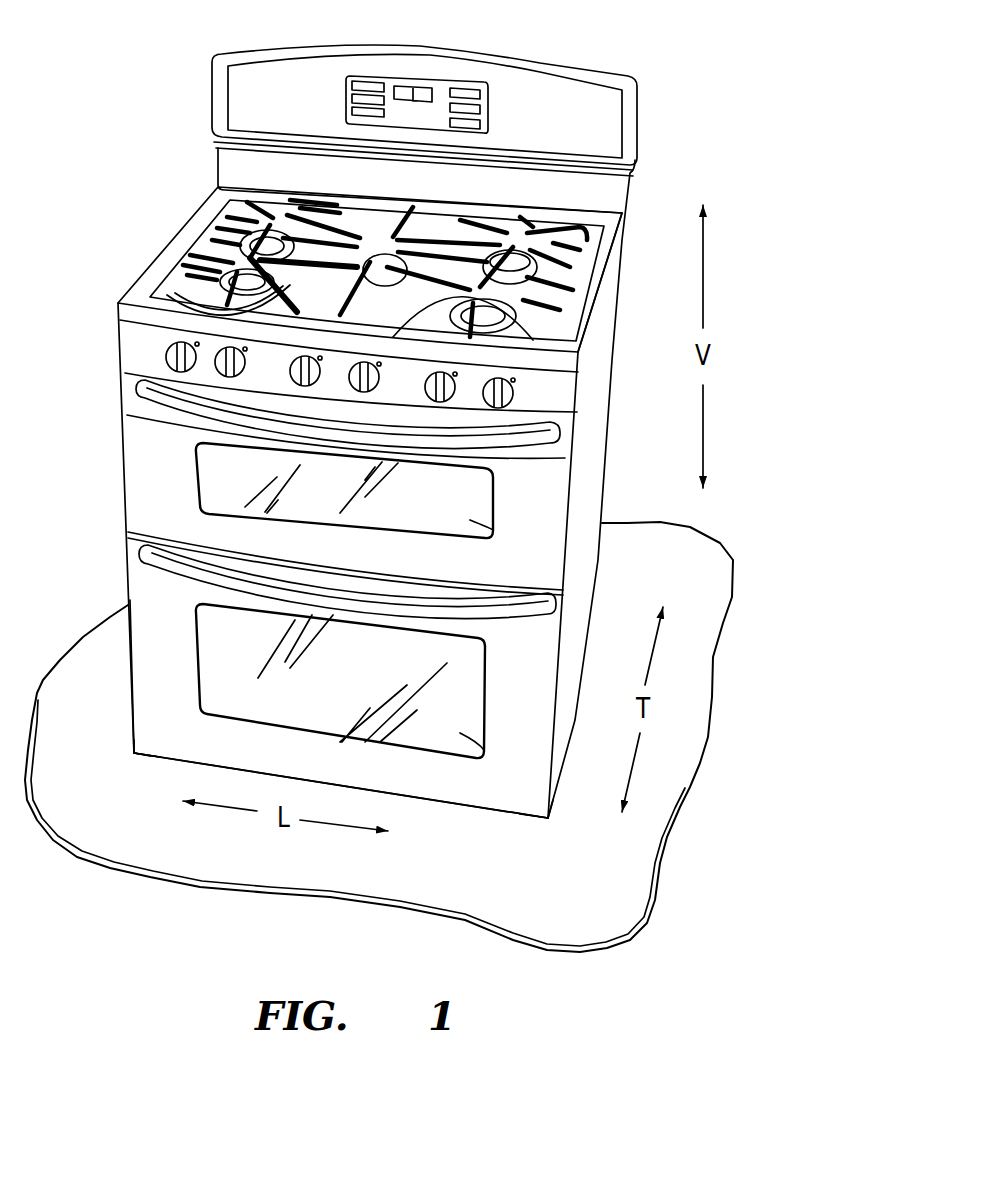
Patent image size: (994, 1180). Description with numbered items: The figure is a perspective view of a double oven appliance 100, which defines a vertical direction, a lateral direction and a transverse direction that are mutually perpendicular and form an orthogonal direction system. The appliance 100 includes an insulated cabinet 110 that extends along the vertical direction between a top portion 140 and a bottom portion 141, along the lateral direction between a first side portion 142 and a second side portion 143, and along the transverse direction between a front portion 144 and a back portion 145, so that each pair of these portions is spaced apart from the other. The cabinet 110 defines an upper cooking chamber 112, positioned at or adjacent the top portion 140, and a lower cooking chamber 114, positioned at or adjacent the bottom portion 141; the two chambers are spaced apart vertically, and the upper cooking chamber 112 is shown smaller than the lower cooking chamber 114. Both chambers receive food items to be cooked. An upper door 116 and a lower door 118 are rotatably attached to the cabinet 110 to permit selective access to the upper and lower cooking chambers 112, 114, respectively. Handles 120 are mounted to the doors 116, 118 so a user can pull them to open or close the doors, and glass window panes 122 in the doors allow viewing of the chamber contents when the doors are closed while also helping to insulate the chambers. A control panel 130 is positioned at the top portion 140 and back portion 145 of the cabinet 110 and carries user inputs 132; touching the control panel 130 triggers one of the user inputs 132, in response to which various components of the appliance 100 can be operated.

The double oven appliance 100 is at (128, 93).
The insulated cabinet 110 is at (592, 453).
The upper cooking chamber 112 is at (150, 447).
The lower cooking chamber 114 is at (156, 634).
The upper door 116 is at (150, 493).
The lower door 118 is at (150, 577).
The handles 120 is at (500, 440).
The glass window panes 122 is at (477, 518).
The control panel 130 is at (570, 97).
The user inputs 132 is at (463, 90).
The top portion 140 is at (96, 302).
The bottom portion 141 is at (124, 753).
The first side portion 142 is at (127, 758).
The second side portion 143 is at (546, 825).
The front portion 144 is at (558, 818).
The back portion 145 is at (608, 608).